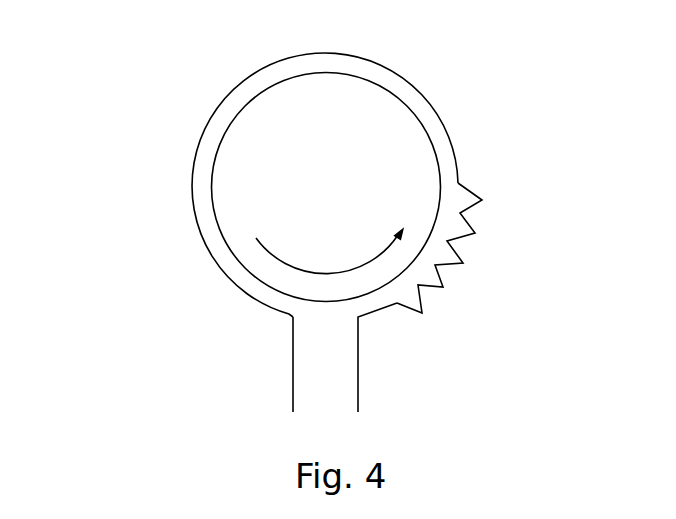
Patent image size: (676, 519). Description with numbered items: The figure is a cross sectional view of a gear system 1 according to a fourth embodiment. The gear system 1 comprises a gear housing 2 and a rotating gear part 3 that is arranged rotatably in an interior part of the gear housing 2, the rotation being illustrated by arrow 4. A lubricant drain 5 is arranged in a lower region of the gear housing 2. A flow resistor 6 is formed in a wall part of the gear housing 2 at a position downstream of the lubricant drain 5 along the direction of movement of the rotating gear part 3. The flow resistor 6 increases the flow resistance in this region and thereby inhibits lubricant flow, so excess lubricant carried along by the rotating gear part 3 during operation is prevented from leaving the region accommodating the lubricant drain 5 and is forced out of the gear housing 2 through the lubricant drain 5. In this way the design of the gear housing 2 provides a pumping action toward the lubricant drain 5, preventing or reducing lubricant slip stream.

The gear system 1 is at (279, 220).
The gear housing 2 is at (407, 80).
The rotating gear part 3 is at (216, 211).
The arrow 4 is at (257, 241).
The lubricant drain 5 is at (354, 365).
The flow resistor 6 is at (442, 268).